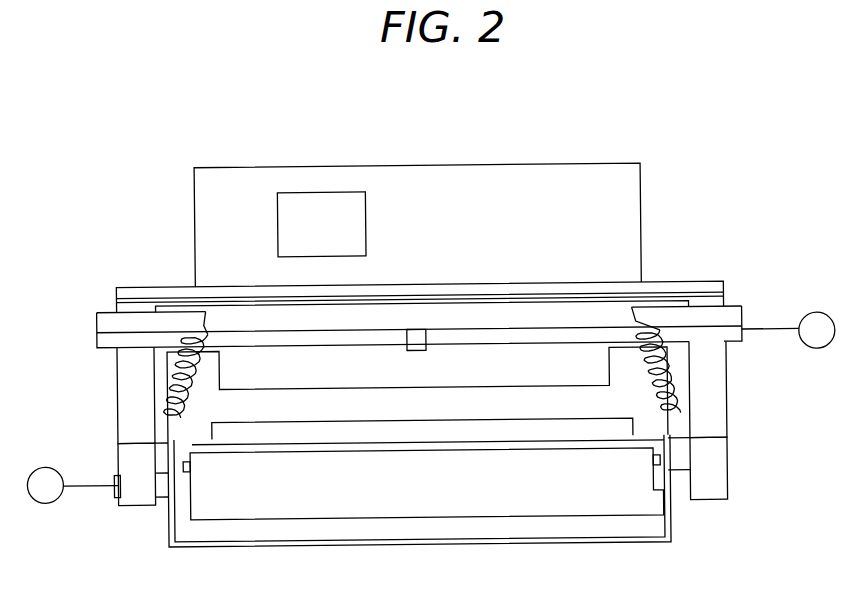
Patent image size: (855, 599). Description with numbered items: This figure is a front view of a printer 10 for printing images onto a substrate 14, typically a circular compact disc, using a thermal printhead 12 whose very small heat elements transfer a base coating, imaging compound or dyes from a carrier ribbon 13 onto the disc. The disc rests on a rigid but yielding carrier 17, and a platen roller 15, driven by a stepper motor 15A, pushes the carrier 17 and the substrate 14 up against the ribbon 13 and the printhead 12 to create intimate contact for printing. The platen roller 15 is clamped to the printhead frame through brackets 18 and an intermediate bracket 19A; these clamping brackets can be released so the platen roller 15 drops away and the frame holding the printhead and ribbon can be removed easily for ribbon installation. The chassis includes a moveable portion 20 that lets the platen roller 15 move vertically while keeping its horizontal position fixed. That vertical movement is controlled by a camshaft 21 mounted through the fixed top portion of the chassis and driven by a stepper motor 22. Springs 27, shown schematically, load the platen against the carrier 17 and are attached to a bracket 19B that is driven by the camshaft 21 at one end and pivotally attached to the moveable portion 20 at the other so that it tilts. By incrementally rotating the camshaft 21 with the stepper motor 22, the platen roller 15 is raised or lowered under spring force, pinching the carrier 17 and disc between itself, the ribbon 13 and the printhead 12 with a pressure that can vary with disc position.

The printer 10 is at (425, 155).
The printhead 12 is at (637, 420).
The carrier ribbon 13 is at (632, 207).
The substrate 14 is at (545, 447).
The platen roller 15 is at (627, 498).
The stepper motor 15A is at (58, 503).
The carrier 17 is at (692, 430).
The brackets 18 is at (130, 414).
The intermediate bracket 19A is at (125, 467).
The bracket 19B is at (317, 347).
The moveable portion 20 is at (183, 547).
The camshaft 21 is at (422, 335).
The stepper motor 22 is at (814, 317).
The springs 27 is at (175, 385).